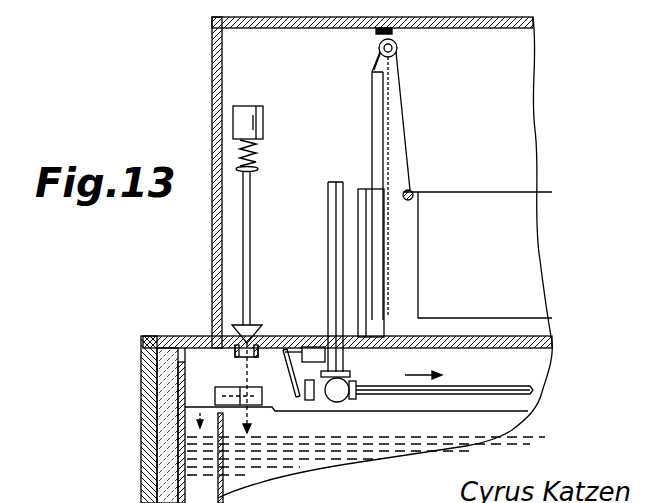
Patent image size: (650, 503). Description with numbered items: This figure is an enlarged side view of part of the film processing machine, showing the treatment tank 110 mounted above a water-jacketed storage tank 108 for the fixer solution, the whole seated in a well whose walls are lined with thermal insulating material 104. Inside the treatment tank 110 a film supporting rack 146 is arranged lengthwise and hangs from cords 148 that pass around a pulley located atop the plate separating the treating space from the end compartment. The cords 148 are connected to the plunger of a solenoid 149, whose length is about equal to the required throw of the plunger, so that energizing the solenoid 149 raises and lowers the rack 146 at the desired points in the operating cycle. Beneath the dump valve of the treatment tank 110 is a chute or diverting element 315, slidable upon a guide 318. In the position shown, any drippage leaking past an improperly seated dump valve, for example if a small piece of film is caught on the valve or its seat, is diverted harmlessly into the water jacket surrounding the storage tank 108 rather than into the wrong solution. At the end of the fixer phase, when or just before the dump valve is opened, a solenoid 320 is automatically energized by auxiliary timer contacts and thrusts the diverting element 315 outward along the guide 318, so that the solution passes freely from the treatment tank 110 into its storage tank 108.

The treatment tank 110 is at (500, 106).
The cords 148 is at (412, 132).
The film supporting rack 146 is at (497, 167).
The solenoid 149 is at (365, 249).
The solenoid 320 is at (327, 345).
The storage tank 108 is at (520, 418).
The diverting element 315 is at (241, 372).
The guide 318 is at (274, 409).
The thermal insulating material 104 is at (168, 475).